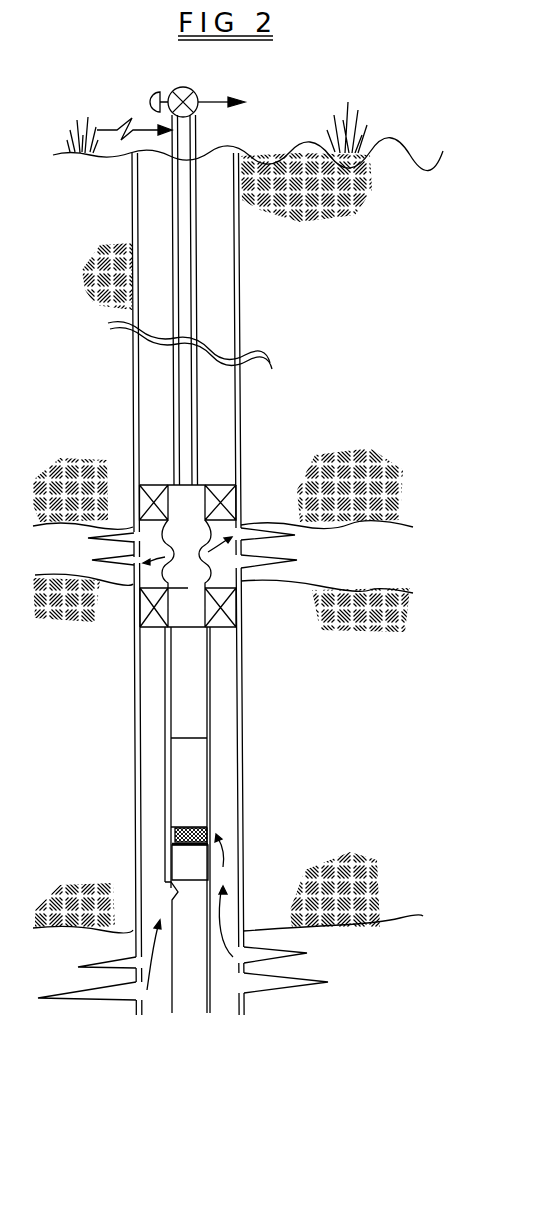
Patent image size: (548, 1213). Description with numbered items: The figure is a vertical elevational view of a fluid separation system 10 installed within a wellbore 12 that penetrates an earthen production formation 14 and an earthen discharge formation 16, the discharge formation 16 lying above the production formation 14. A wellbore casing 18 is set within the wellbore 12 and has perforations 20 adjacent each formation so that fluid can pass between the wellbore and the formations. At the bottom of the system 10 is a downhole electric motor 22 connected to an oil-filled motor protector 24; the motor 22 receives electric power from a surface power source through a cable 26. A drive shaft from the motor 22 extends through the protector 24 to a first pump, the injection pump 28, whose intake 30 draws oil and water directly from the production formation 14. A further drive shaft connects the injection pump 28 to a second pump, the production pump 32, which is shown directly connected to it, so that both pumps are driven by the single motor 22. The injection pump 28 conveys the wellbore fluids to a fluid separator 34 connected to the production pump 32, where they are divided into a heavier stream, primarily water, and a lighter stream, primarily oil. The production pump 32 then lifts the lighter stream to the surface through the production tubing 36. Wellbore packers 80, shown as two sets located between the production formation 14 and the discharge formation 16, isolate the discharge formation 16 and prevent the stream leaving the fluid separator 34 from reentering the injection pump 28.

The fluid separation system 10 is at (266, 725).
The wellbore 12 is at (238, 246).
The production formation 14 is at (228, 922).
The discharge formation 16 is at (223, 540).
The wellbore casing 18 is at (239, 407).
The perforations 20 is at (134, 528).
The downhole electric motor 22 is at (200, 993).
The motor protector 24 is at (204, 870).
The cable 26 is at (171, 238).
The injection pump 28 is at (208, 782).
The intake 30 is at (196, 827).
The production pump 32 is at (197, 652).
The fluid separator 34 is at (187, 588).
The production tubing 36 is at (189, 298).
The wellbore packers 80 is at (223, 488).